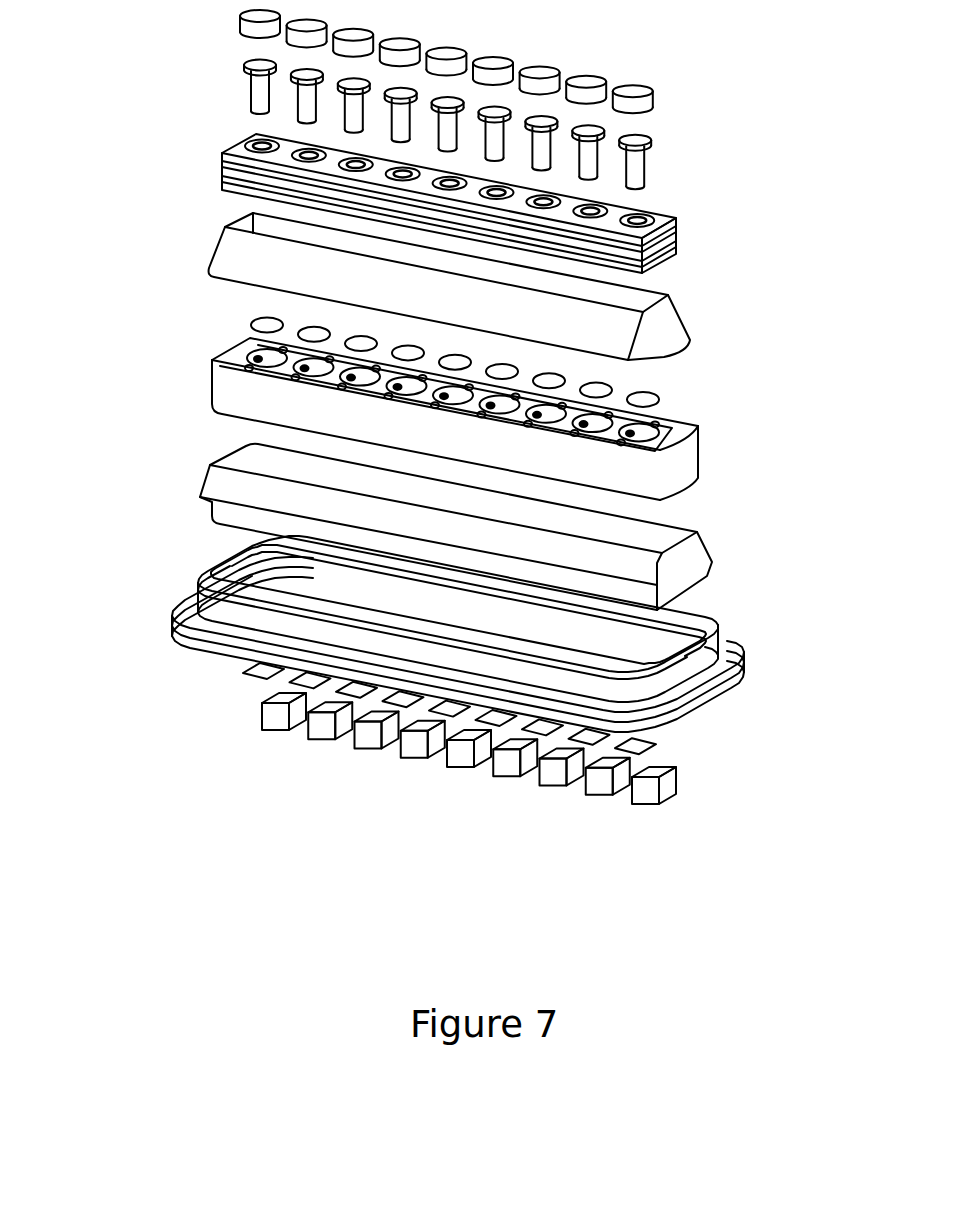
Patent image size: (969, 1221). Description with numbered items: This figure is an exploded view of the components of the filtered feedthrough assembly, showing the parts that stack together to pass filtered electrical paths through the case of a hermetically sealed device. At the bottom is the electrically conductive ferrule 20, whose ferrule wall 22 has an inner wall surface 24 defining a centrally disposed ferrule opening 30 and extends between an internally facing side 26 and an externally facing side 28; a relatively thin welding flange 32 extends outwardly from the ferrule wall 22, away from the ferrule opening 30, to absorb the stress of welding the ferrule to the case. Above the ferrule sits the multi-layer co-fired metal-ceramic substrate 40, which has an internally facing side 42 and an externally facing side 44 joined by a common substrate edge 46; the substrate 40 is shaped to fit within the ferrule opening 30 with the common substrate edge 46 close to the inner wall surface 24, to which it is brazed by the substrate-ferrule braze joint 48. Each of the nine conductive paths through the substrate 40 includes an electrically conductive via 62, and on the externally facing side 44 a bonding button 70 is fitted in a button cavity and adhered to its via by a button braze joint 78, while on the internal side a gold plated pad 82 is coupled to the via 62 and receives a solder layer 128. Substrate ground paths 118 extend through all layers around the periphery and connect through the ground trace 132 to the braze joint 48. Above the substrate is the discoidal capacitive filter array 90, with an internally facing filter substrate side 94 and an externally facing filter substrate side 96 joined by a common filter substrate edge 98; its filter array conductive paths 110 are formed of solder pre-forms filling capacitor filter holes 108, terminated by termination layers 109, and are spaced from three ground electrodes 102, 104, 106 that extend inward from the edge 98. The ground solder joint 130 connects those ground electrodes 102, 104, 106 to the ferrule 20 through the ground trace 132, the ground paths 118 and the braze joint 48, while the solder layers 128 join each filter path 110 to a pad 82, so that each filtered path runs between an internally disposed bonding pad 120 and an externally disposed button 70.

The electrically conductive ferrule 20 is at (145, 660).
The ferrule wall 22 is at (738, 645).
The inner wall surface 24 is at (203, 577).
The internally facing side 26 is at (716, 638).
The externally facing side 28 is at (730, 700).
The ferrule opening 30 is at (247, 580).
The welding flange 32 is at (744, 668).
The multi-layer co-fired metal-ceramic substrate 40 is at (118, 360).
The internally facing side 42 is at (250, 360).
The externally facing side 44 is at (216, 425).
The common substrate edge 46 is at (214, 393).
The substrate-ferrule braze joint 48 is at (177, 488).
The electrically conductive via 62 is at (240, 350).
The substrate conductor pad or bonding button 70 is at (733, 794).
The button braze joint 78 is at (718, 755).
The substrate conductor plated pad 82 is at (700, 428).
The discoidal capacitive filter array 90 is at (150, 96).
The internally facing filter substrate side 94 is at (250, 135).
The externally facing filter substrate side 96 is at (677, 262).
The common filter substrate edge 98 is at (677, 245).
The capacitor ground electrode 102 is at (222, 158).
The capacitor ground electrode 104 is at (222, 172).
The capacitor ground electrode 106 is at (222, 183).
The capacitor filter hole 108 is at (677, 218).
The termination layer 109 is at (677, 226).
The filter array conductive path 110 is at (736, 180).
The substrate ground path 118 is at (703, 437).
The internally disposed bonding pad 120 is at (727, 108).
The solder layer 128 is at (493, 366).
The ground solder joint 130 is at (237, 253).
The ground trace 132 is at (232, 388).